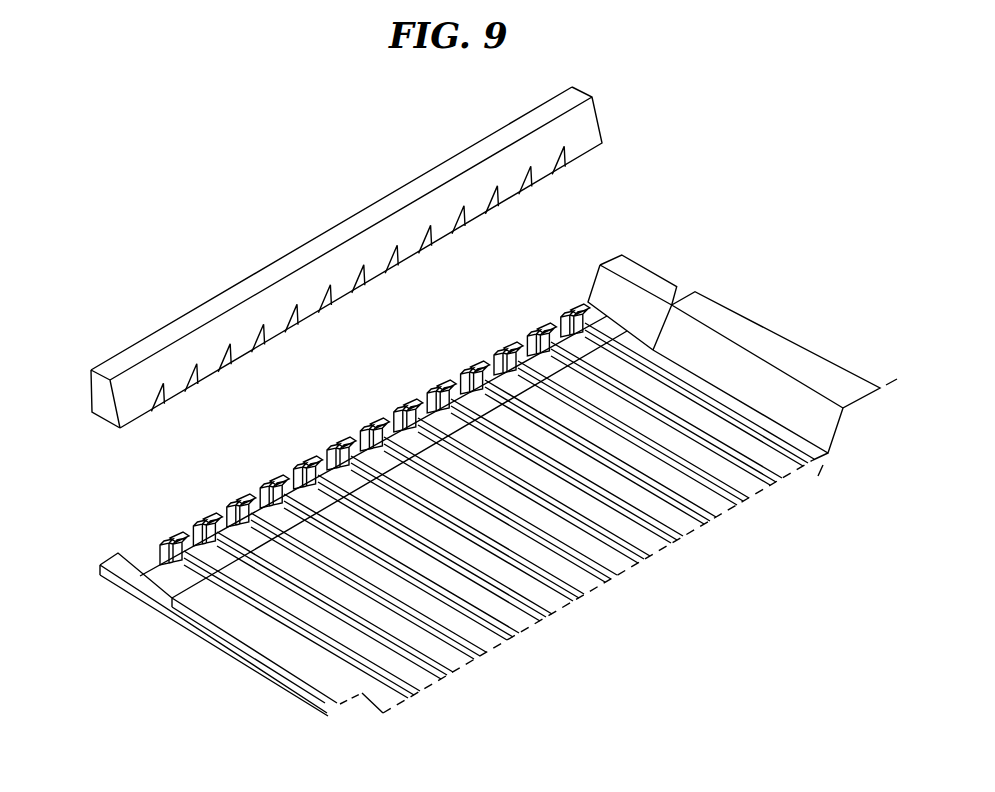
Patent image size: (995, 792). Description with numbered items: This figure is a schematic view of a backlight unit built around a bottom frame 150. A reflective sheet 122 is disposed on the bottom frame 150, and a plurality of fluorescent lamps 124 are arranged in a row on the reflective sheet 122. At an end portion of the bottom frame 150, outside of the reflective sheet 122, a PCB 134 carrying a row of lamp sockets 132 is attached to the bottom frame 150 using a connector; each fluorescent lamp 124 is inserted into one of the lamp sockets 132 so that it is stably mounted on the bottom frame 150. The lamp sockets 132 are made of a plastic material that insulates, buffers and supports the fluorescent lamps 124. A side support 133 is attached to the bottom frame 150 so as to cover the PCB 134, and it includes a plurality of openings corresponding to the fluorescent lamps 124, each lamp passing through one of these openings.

The reflective sheet 122 is at (733, 322).
The fluorescent lamps 124 is at (750, 422).
The lamp sockets 132 is at (165, 527).
The side support 133 is at (322, 240).
The PCB 134 is at (223, 522).
The bottom frame 150 is at (640, 272).